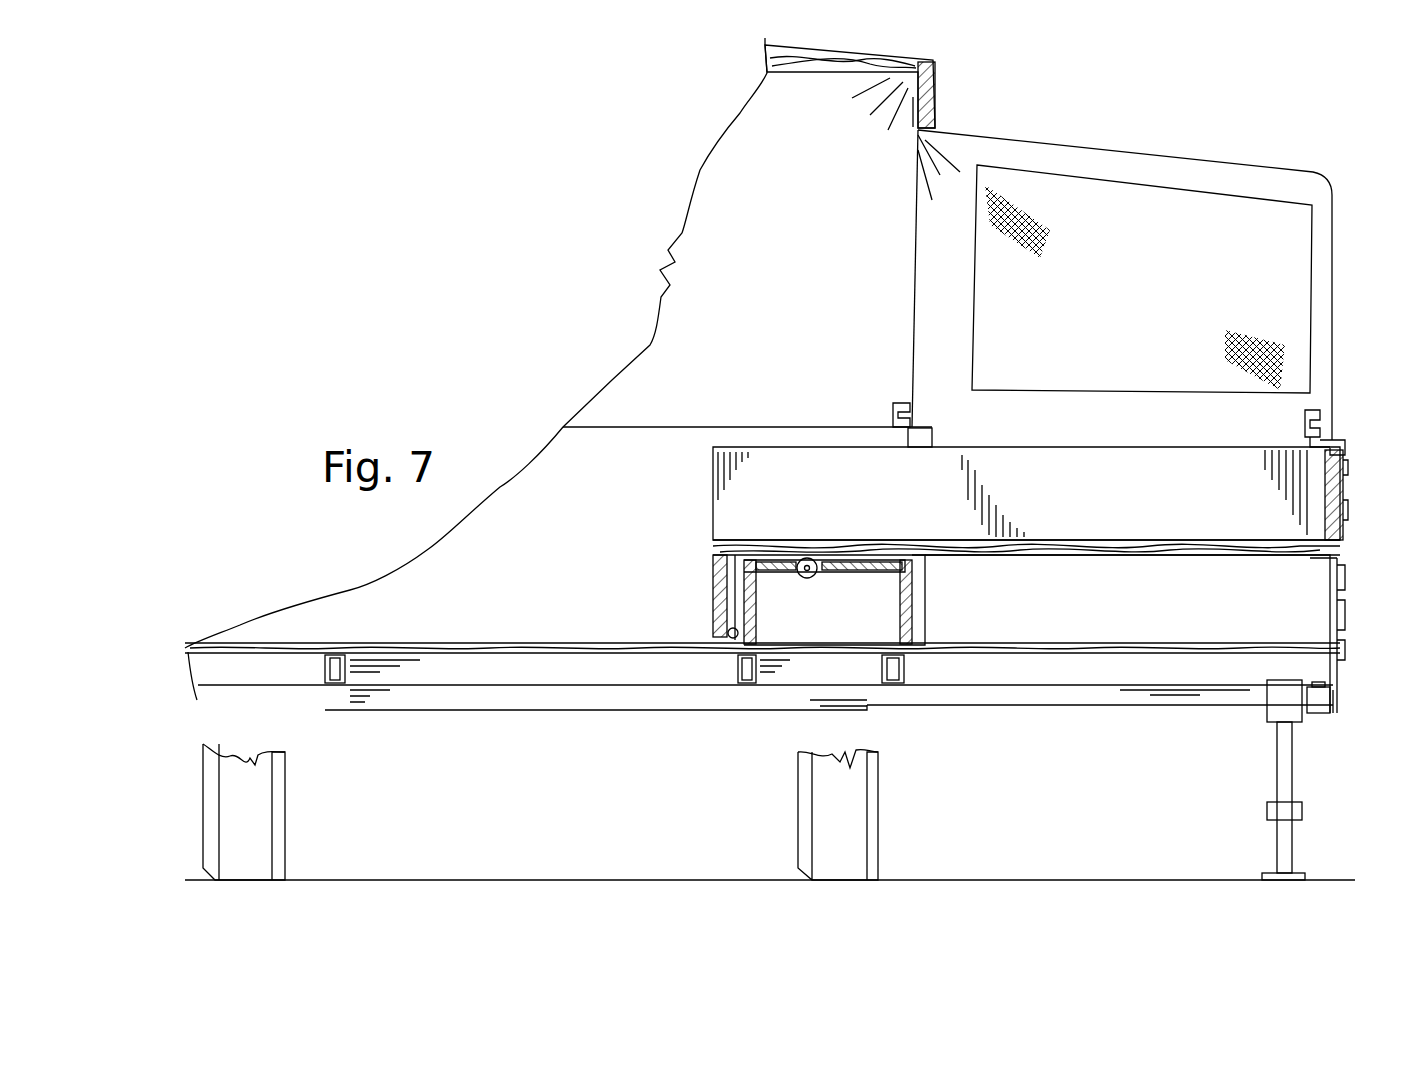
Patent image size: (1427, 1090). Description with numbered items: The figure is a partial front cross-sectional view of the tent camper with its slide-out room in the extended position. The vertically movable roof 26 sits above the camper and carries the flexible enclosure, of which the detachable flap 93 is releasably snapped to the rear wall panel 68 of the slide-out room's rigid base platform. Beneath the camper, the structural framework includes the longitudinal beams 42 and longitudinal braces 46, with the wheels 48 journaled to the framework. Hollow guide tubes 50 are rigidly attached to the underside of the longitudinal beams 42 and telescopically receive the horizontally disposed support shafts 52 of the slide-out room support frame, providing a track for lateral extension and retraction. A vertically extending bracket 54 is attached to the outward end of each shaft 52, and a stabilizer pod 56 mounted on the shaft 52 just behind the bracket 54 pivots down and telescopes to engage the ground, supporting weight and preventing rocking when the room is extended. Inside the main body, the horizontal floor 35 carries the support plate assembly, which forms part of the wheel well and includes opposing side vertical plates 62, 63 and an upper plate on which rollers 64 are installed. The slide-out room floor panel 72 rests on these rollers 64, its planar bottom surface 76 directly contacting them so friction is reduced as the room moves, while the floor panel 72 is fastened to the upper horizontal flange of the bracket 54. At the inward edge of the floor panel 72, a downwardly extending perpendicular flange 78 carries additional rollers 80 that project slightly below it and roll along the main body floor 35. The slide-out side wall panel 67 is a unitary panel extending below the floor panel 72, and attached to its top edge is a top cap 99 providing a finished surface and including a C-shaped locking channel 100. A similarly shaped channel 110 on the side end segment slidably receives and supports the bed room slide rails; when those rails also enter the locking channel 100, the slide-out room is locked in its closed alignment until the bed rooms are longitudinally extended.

The roof 26 is at (892, 48).
The enclosure flap 93 is at (1230, 185).
The channel 110 is at (893, 405).
The C-shaped locking channel 100 is at (1305, 417).
The top cap 99 is at (1330, 448).
The rear wall panel 68 is at (870, 502).
The floor panel 72 is at (1170, 545).
The slide-out side wall panel 67 is at (1343, 570).
The flange 78 is at (712, 600).
The vertical plate 62 is at (757, 612).
The vertical plate 63 is at (910, 592).
The rollers 64 is at (810, 576).
The bottom surface 76 is at (1082, 548).
The floor 35 is at (495, 645).
The bracket 54 is at (1330, 655).
The guide tubes 50 is at (597, 710).
The support shafts 52 is at (1105, 705).
The longitudinal beams 42 is at (325, 665).
The longitudinal braces 46 is at (905, 670).
The rollers 80 is at (728, 640).
The wheels 48 is at (285, 795).
The stabilizer pods 56 is at (1292, 780).